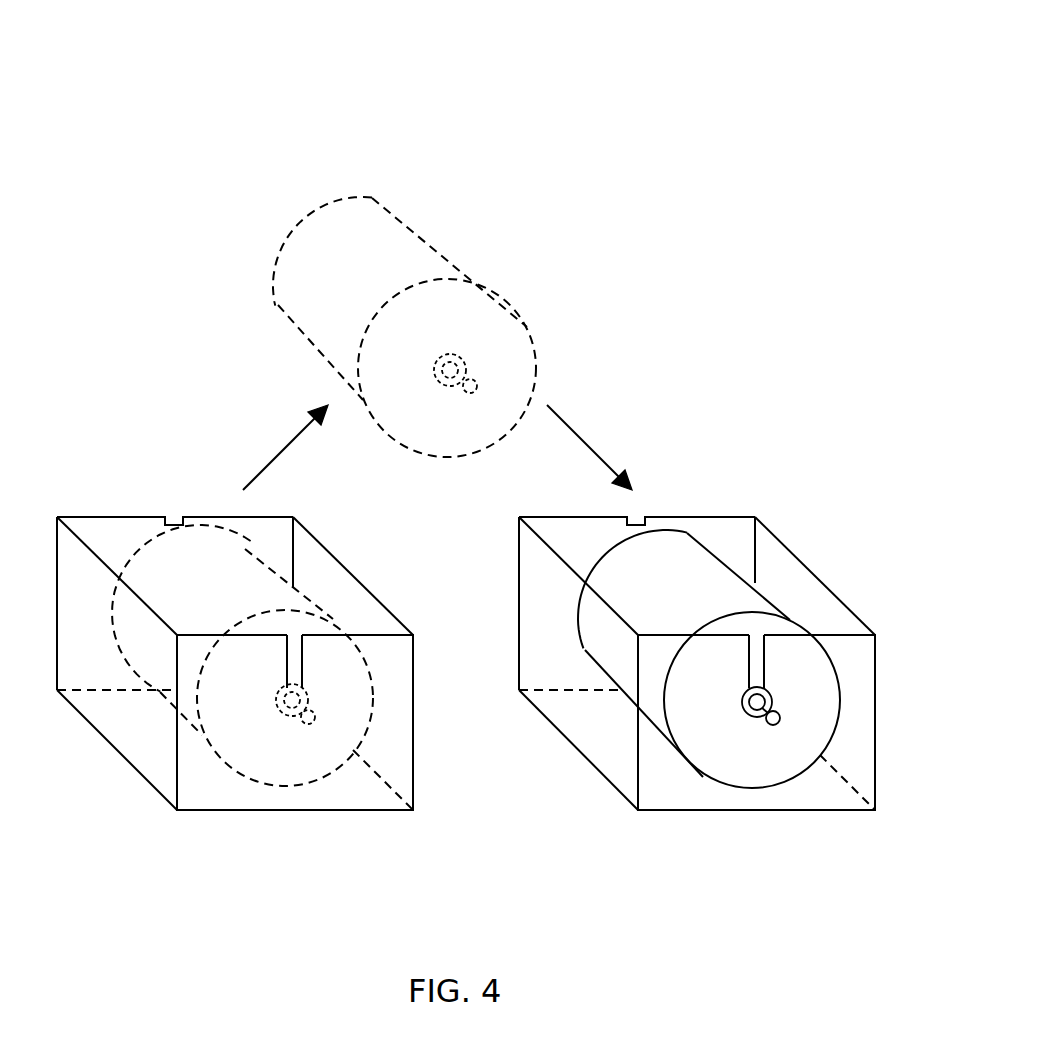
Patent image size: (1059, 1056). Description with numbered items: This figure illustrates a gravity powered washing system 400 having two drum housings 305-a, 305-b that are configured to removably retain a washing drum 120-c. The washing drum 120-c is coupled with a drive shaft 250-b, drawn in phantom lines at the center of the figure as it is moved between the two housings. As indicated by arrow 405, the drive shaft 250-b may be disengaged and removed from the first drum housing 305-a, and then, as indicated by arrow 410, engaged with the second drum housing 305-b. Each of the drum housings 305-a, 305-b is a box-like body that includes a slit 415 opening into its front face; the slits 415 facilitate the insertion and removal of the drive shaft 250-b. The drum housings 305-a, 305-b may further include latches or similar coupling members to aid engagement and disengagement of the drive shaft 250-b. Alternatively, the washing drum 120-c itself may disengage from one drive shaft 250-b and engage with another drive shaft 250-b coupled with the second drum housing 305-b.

The washing system 400 is at (747, 100).
The washing drum 120-c is at (362, 195).
The drive shaft 250-b is at (478, 383).
The first drum housing 305-a is at (130, 515).
The second drum housing 305-b is at (722, 515).
The arrow 405 is at (285, 445).
The arrow 410 is at (578, 437).
The slits 415 is at (302, 667).